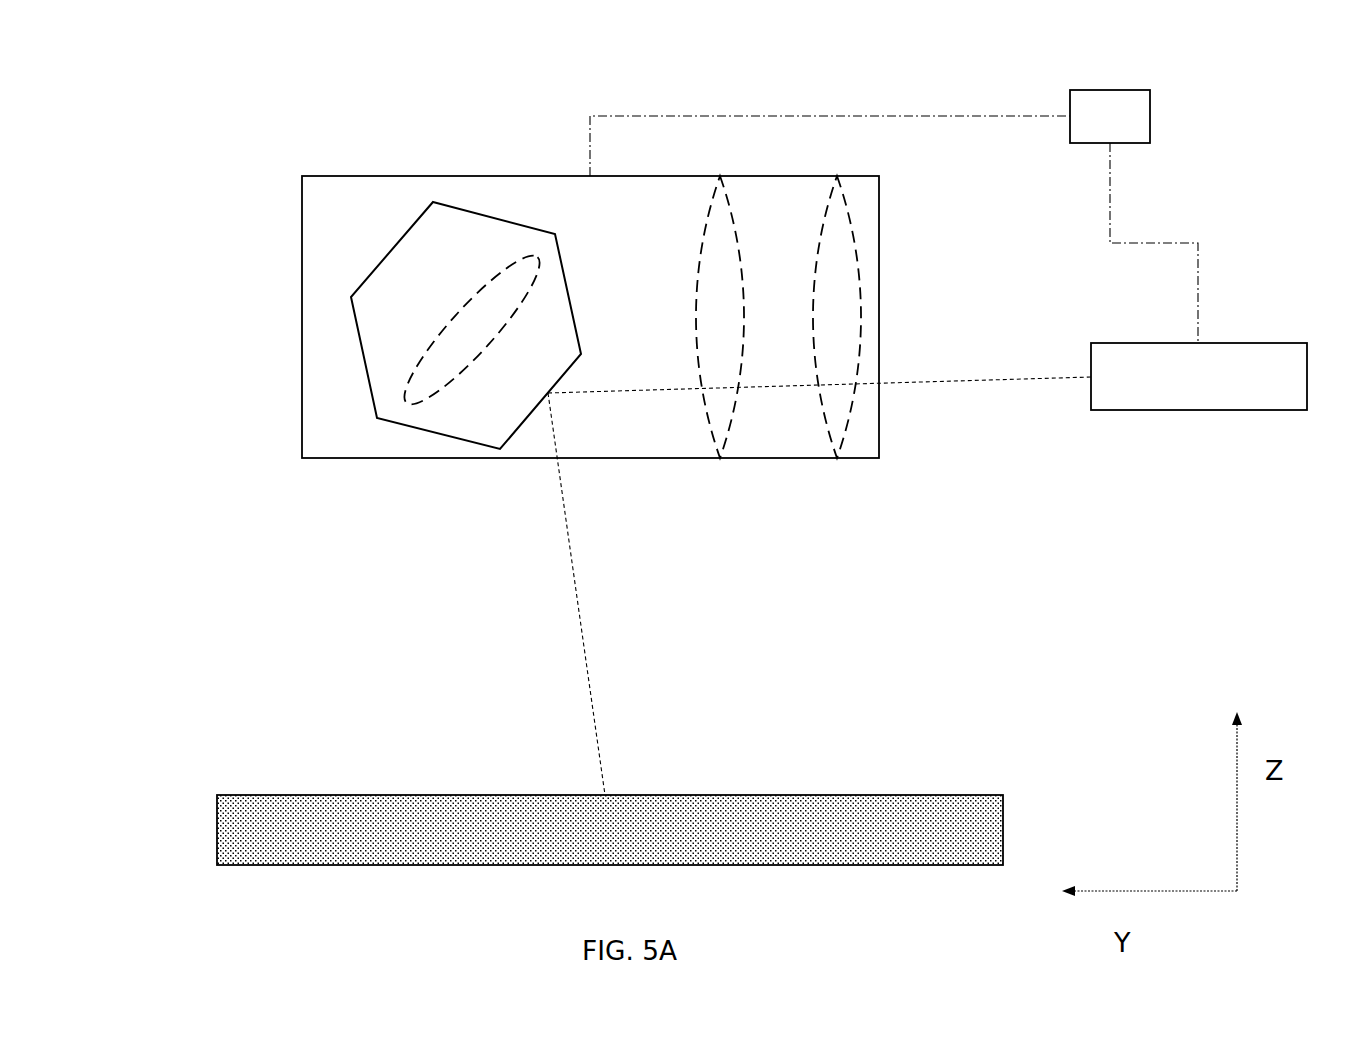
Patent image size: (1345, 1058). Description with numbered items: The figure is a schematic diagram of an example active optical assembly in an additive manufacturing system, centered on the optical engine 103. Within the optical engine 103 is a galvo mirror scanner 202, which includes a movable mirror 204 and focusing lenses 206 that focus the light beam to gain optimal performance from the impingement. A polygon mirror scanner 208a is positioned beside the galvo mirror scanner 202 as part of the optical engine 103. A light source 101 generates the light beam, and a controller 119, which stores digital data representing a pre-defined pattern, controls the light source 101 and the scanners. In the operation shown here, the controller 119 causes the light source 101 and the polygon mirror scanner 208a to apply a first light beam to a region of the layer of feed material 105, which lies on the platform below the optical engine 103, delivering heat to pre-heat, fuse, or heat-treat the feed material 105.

The optical engine 103 is at (387, 113).
The galvo mirror scanner 202 is at (428, 178).
The polygon mirror scanner 208a is at (351, 297).
The movable mirror 204 is at (438, 395).
The focusing lenses 206 is at (720, 458).
The controller 119 is at (1135, 131).
The light source 101 is at (1223, 393).
The feed material 105 is at (652, 847).